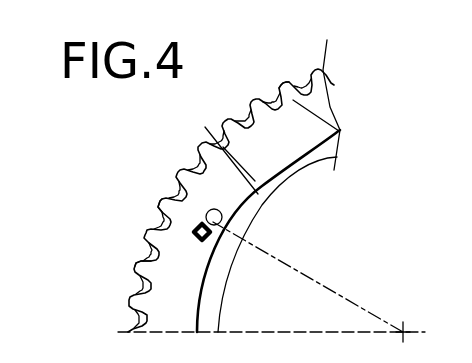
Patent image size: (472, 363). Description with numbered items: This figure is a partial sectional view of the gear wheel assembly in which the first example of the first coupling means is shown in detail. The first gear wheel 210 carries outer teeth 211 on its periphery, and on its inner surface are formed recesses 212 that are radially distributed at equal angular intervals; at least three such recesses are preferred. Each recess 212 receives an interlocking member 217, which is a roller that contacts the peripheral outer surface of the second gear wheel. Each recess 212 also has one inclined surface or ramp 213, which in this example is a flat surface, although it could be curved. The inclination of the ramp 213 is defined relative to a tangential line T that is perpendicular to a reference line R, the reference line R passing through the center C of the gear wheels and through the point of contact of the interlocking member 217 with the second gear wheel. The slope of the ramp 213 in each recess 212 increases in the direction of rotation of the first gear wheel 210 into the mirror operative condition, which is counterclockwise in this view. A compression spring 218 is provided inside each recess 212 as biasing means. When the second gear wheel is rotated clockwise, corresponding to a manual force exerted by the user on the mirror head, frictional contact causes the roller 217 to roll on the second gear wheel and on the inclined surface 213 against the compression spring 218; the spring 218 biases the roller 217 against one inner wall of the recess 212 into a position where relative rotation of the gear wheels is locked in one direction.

The first gear wheel 210 is at (263, 82).
The outer teeth 211 is at (290, 82).
The recesses 212 is at (202, 287).
The inclined surface or ramp 213 is at (162, 208).
The interlocking member 217 is at (200, 212).
The compression spring 218 is at (192, 234).
The tangential line T is at (226, 150).
The reference line R is at (292, 262).
The center C is at (405, 331).